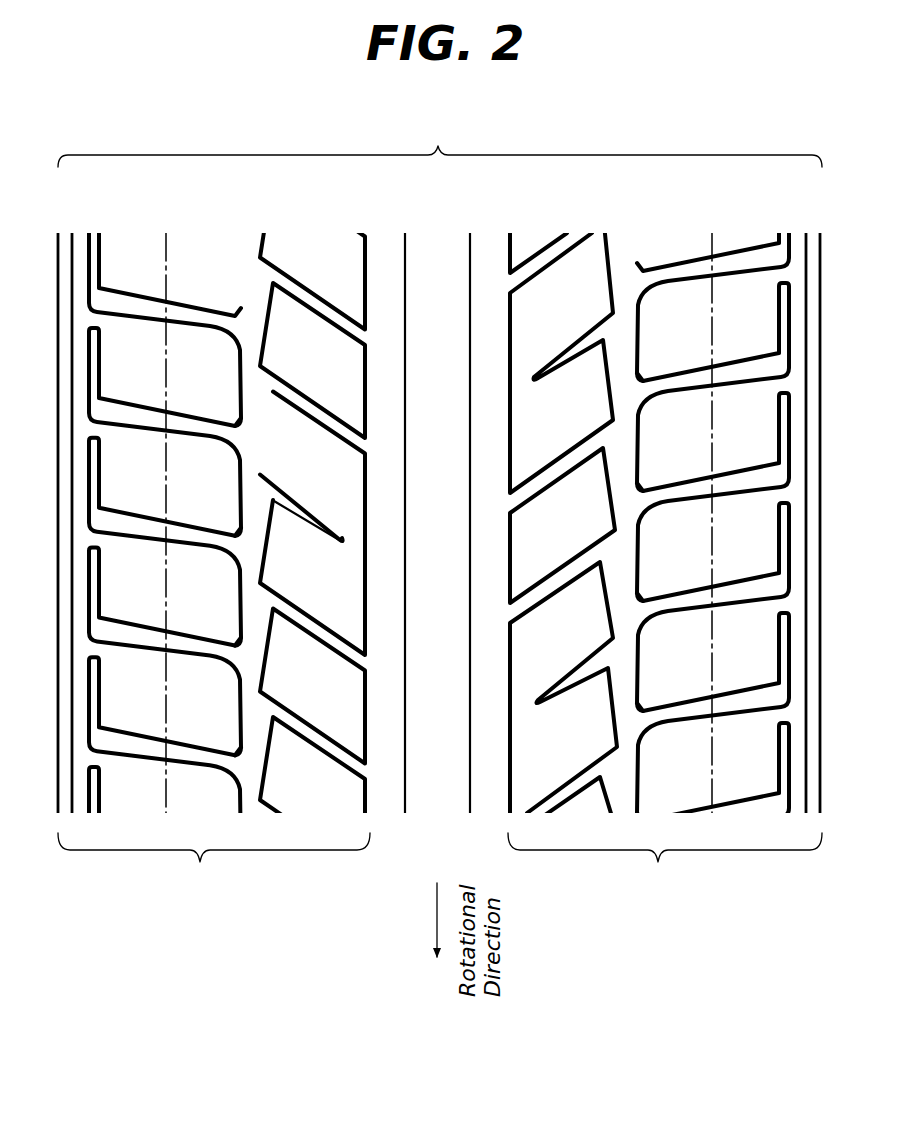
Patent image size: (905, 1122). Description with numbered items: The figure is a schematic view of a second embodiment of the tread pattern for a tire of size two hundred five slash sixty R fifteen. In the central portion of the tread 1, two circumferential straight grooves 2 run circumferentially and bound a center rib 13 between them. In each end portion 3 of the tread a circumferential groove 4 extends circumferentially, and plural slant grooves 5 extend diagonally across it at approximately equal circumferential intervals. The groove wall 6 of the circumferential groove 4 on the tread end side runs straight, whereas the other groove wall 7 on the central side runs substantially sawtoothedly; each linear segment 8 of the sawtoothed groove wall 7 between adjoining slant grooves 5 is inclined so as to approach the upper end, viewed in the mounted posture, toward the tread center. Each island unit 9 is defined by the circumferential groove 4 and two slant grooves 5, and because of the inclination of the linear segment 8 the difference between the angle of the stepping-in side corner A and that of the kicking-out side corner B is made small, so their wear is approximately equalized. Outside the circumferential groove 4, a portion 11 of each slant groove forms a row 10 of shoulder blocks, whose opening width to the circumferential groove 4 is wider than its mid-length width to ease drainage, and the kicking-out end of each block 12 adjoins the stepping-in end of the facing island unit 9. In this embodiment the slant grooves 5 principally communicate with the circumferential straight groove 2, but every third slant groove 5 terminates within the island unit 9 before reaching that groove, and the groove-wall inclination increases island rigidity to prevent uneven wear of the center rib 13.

The tread 1 is at (440, 141).
The circumferential straight groove 2 is at (388, 238).
The end portion 3 is at (440, 867).
The circumferential groove 4 is at (270, 783).
The slant groove 5 is at (300, 738).
The groove wall 6 is at (240, 503).
The groove wall 7 is at (271, 537).
The linear segment 8 is at (264, 452).
The island unit 9 is at (534, 658).
The row of shoulder blocks 10 is at (675, 235).
The portion of the slant groove 11 is at (693, 690).
The block 12 is at (668, 437).
The center rib 13 is at (447, 253).
The stepping-in side corner A is at (620, 747).
The kicking-out side corner B is at (638, 655).